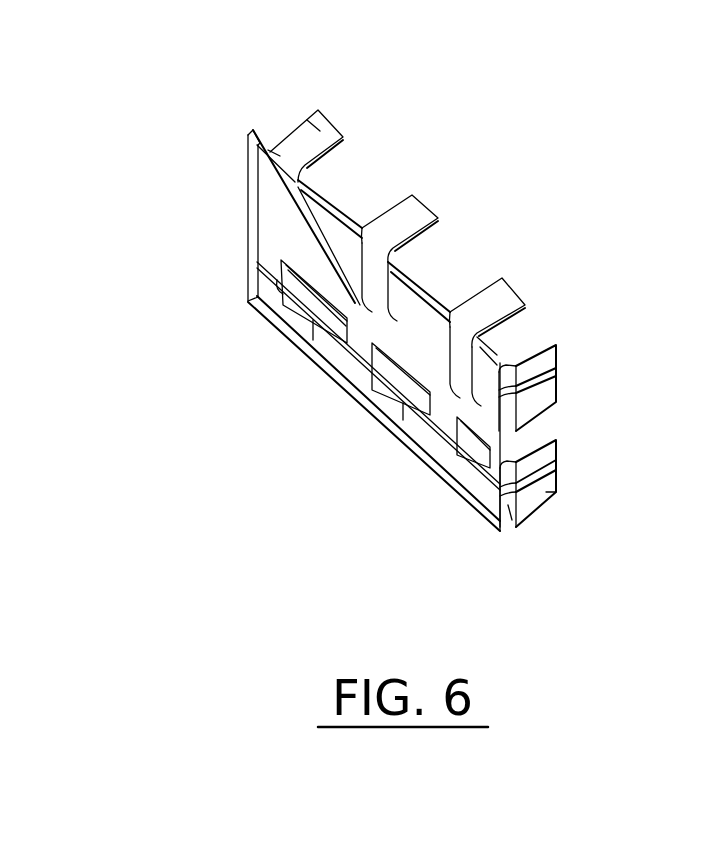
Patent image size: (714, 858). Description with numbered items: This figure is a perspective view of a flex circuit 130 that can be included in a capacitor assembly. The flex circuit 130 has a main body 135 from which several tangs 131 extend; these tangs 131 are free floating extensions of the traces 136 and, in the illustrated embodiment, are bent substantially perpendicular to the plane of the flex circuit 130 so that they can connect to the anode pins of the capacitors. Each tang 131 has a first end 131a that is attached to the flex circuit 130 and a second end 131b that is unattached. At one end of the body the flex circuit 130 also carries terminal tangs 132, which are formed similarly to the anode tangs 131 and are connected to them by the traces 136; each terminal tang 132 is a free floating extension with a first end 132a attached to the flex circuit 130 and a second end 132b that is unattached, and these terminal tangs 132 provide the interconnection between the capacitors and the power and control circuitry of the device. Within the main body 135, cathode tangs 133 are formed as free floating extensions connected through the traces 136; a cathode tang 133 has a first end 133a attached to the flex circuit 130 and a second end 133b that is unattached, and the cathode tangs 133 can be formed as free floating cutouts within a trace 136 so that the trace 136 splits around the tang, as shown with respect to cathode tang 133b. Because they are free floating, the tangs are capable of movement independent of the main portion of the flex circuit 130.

The flex circuit 130 is at (96, 226).
The tang 131 is at (300, 145).
The first end 131a is at (265, 143).
The second end 131b is at (316, 128).
The terminal tang 132 is at (556, 400).
The first end 132a is at (512, 521).
The second end 132b is at (558, 494).
The cathode tang 133 is at (473, 457).
The first end 133a is at (278, 288).
The second end 133b is at (336, 364).
The main body 135 is at (247, 138).
The traces 136 is at (332, 262).